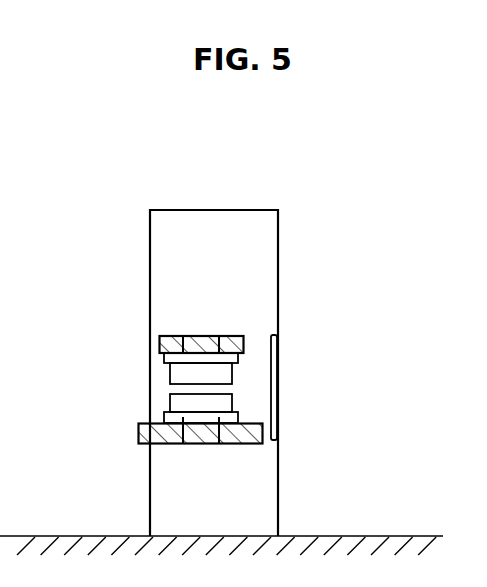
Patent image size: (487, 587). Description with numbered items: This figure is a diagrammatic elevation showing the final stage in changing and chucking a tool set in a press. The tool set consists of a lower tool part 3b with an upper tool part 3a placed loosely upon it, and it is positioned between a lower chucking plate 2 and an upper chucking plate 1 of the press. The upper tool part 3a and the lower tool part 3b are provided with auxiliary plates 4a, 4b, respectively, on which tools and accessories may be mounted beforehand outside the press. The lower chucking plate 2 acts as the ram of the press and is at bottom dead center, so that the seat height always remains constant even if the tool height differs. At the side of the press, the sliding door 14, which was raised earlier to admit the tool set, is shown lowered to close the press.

The upper chucking plate 1 is at (160, 345).
The lower chucking plate 2 is at (138, 437).
The upper tool part 3a is at (170, 375).
The lower tool part 3b is at (170, 403).
The auxiliary plate 4a is at (166, 361).
The auxiliary plate 4b is at (165, 418).
The sliding door 14 is at (273, 396).